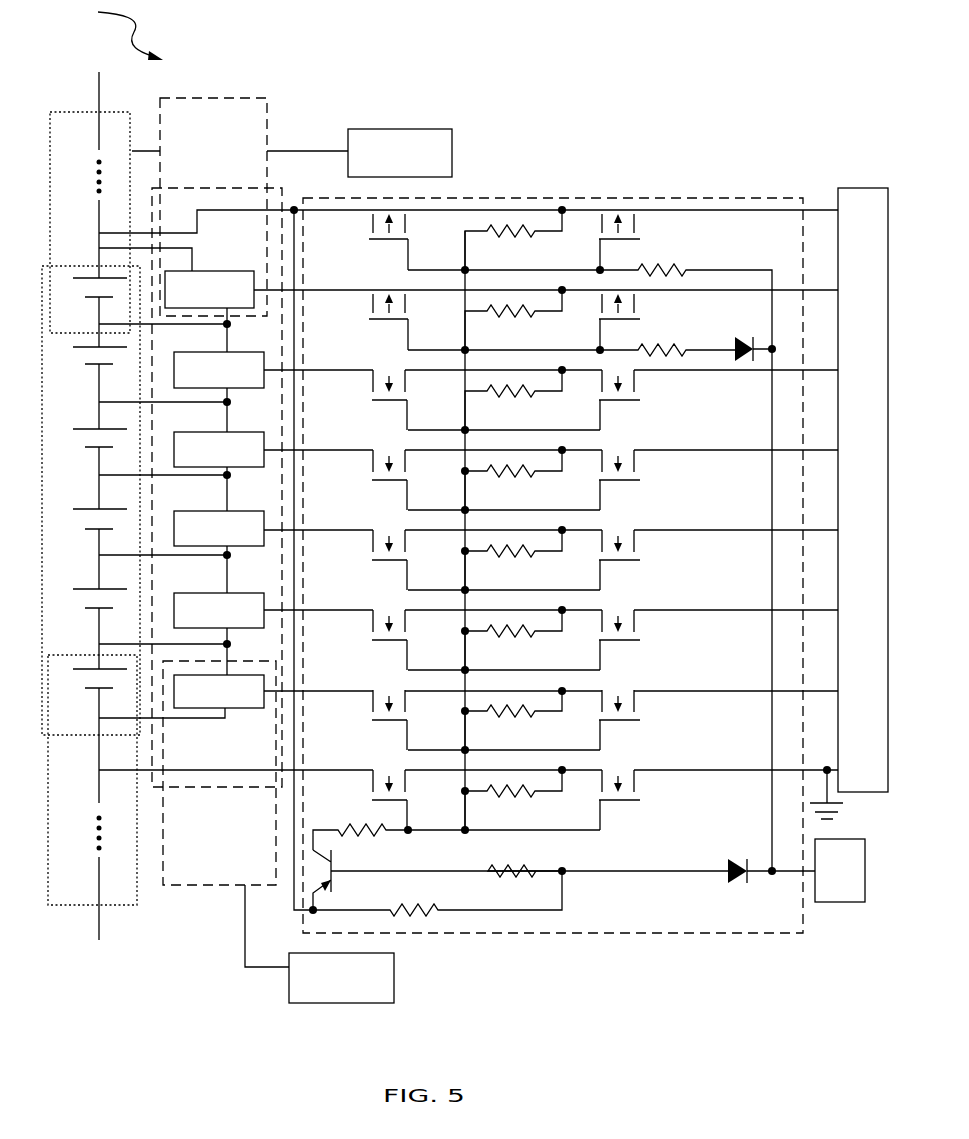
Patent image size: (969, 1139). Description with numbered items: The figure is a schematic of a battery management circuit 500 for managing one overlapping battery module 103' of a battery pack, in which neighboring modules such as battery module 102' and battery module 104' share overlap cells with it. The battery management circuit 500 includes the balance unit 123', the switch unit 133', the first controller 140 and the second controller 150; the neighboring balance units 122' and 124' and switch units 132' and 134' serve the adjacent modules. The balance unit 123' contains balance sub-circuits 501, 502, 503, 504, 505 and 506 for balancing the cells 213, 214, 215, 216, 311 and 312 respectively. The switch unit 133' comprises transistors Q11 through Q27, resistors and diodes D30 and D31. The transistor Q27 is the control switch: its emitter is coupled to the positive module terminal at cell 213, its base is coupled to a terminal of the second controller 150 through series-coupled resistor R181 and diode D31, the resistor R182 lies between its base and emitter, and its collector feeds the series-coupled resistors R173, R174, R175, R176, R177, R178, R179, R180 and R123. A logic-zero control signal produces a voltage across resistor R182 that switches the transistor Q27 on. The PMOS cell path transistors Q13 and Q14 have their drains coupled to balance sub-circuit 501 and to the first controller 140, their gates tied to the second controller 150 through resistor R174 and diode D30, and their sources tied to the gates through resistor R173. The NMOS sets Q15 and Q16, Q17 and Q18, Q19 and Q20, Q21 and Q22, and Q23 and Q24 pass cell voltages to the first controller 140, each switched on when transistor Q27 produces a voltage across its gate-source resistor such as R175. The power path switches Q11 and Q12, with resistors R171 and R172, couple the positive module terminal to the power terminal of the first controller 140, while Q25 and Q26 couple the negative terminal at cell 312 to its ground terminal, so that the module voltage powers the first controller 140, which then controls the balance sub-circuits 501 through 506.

The battery management circuit 500 is at (112, 32).
The battery module 102' is at (86, 210).
The battery module 103' is at (91, 487).
The battery module 104' is at (88, 795).
The balance unit 122' is at (213, 192).
The balance unit 123' is at (217, 473).
The balance unit 124' is at (219, 792).
The switch unit 132' is at (400, 153).
The switch unit 133' is at (553, 552).
The switch unit 134' is at (341, 978).
The first controller 140 is at (849, 503).
The second controller 150 is at (818, 870).
The cell 213 is at (96, 298).
The cell 214 is at (97, 366).
The cell 215 is at (97, 447).
The cell 216 is at (99, 529).
The cell 311 is at (101, 608).
The cell 312 is at (101, 688).
The balance sub-circuit 501 is at (209, 289).
The balance sub-circuit 502 is at (219, 370).
The balance sub-circuit 503 is at (219, 449).
The balance sub-circuit 504 is at (219, 528).
The balance sub-circuit 505 is at (219, 610).
The balance sub-circuit 506 is at (219, 691).
The transistor Q11 is at (408, 241).
The transistor Q12 is at (639, 241).
The transistor Q13 is at (408, 321).
The transistor Q14 is at (639, 321).
The transistor Q15 is at (370, 400).
The transistor Q16 is at (637, 400).
The transistor Q17 is at (370, 480).
The transistor Q18 is at (637, 480).
The transistor Q19 is at (370, 560).
The transistor Q20 is at (637, 560).
The transistor Q21 is at (370, 640).
The transistor Q22 is at (637, 640).
The transistor Q23 is at (370, 720).
The transistor Q24 is at (637, 720).
The transistor Q25 is at (370, 800).
The transistor Q26 is at (639, 800).
The transistor Q27 is at (435, 882).
The resistor R171 is at (515, 238).
The resistor R172 is at (686, 559).
The resistor R173 is at (515, 318).
The resistor R174 is at (667, 341).
The resistor R175 is at (515, 398).
The resistor R176 is at (513, 478).
The resistor R177 is at (513, 558).
The resistor R178 is at (513, 638).
The resistor R179 is at (513, 718).
The resistor R180 is at (513, 798).
The resistor R181 is at (608, 862).
The resistor R182 is at (439, 891).
The resistor R123 is at (360, 839).
The diode D30 is at (749, 338).
The diode D31 is at (745, 859).